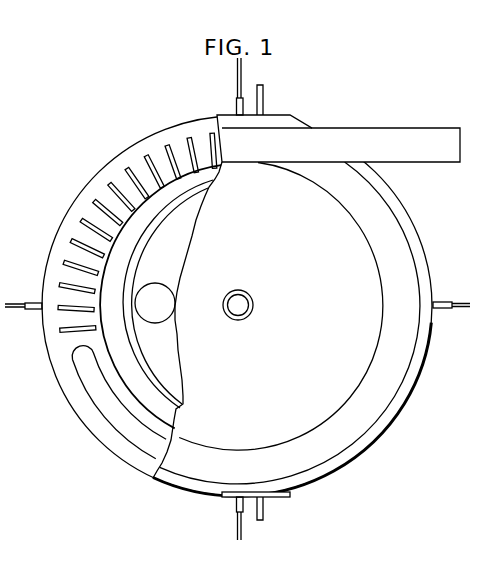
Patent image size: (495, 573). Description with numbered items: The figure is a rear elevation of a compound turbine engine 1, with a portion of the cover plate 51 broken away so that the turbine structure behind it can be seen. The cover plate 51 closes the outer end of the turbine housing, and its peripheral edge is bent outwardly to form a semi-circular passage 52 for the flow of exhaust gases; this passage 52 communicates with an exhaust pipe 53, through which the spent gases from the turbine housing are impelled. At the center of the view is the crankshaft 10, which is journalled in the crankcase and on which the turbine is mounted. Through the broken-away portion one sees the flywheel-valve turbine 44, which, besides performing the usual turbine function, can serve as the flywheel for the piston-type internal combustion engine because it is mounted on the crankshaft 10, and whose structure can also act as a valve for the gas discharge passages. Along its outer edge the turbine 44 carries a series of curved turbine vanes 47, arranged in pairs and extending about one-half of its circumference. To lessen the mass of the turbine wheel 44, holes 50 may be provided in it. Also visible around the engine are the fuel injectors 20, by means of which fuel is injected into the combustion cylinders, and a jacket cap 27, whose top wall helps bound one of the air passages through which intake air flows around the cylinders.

The compound turbine engine 1 is at (93, 440).
The crankshaft 10 is at (238, 305).
The fuel injectors 20 is at (235, 105).
The jacket cap 27 is at (328, 471).
The flywheel-valve turbine 44 is at (163, 352).
The turbine vanes 47 is at (71, 225).
The holes 50 is at (165, 313).
The cover plate 51 is at (269, 375).
The semi-circular passage 52 is at (381, 398).
The exhaust pipe 53 is at (356, 142).